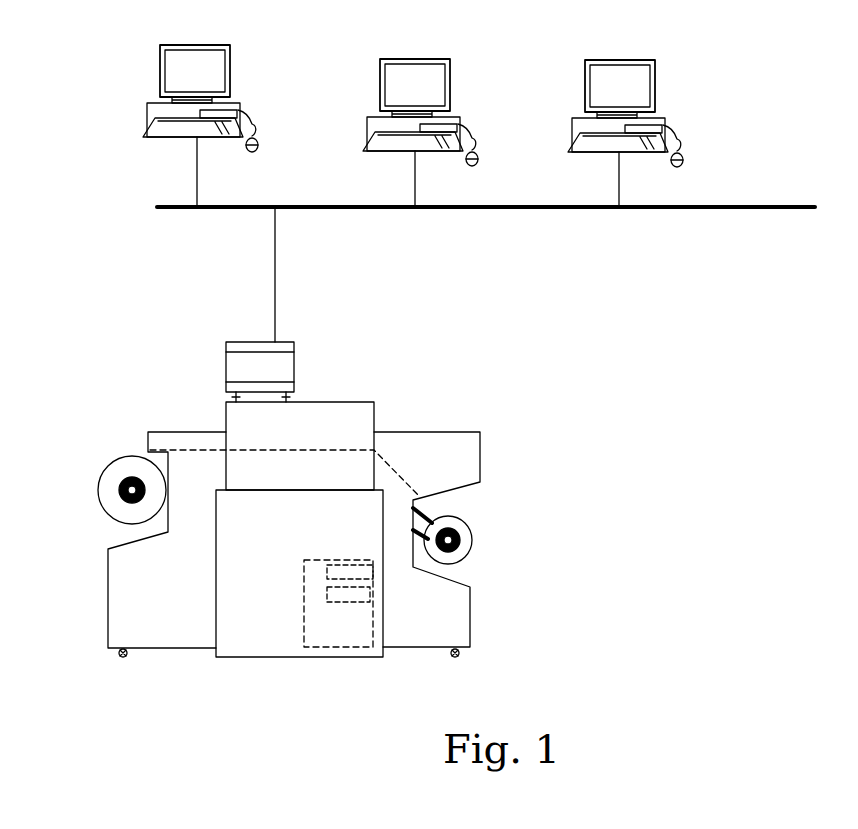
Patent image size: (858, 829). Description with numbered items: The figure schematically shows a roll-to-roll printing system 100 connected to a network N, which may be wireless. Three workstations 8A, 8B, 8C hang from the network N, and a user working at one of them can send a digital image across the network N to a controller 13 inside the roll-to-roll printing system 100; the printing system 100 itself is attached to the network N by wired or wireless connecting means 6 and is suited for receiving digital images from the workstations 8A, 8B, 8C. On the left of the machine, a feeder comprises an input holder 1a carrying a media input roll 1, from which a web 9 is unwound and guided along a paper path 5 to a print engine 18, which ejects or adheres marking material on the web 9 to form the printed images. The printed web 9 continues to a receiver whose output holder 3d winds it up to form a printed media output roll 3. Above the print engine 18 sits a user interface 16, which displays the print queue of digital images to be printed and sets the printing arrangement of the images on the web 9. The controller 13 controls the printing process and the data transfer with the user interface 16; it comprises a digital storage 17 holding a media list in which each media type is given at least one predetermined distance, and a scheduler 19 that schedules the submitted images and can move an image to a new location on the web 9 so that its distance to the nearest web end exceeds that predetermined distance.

The roll-to-roll printing system 100 is at (552, 617).
The media input roll 1 is at (112, 512).
The input holder 1a is at (118, 490).
The printed media output roll 3 is at (463, 557).
The output holder 3d is at (460, 527).
The paper path 5 is at (326, 449).
The connecting means 6 is at (275, 305).
The workstation 8A is at (240, 110).
The workstation 8B is at (460, 124).
The workstation 8C is at (665, 124).
The web 9 is at (146, 452).
The controller 13 is at (305, 578).
The user interface 16 is at (294, 373).
The digital storage 17 is at (357, 562).
The print engine 18 is at (374, 413).
The scheduler 19 is at (365, 595).
The network N is at (813, 209).